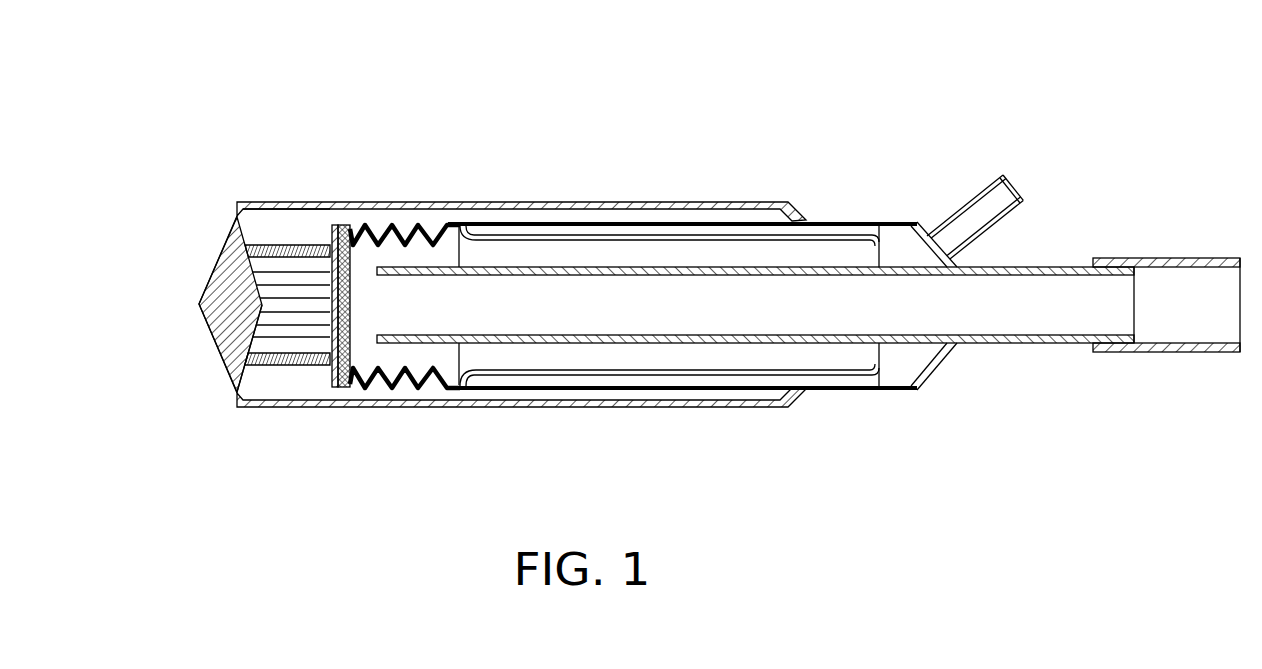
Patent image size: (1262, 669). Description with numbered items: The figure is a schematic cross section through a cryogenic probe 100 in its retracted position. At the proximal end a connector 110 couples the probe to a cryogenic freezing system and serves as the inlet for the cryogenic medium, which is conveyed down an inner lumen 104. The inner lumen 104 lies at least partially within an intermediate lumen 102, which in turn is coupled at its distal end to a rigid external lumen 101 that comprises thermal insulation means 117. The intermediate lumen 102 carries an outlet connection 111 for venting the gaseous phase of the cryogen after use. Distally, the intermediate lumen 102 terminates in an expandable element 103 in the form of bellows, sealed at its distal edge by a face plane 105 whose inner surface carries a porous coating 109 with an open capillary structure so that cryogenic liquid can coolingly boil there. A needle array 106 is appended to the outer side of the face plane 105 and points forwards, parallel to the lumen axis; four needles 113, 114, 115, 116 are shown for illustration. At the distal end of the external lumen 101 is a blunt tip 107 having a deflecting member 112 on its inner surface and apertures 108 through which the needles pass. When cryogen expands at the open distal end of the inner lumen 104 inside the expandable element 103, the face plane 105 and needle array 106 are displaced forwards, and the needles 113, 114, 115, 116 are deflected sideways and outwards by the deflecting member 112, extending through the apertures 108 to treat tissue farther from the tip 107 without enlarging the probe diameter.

The cryogenic probe 100 is at (488, 163).
The external lumen 101 is at (482, 407).
The intermediate lumen 102 is at (503, 222).
The expandable element 103 is at (388, 378).
The inner lumen 104 is at (645, 267).
The face plane 105 is at (320, 368).
The needle array 106 is at (288, 245).
The blunt tip 107 is at (272, 325).
The apertures 108 is at (245, 222).
The porous coating 109 is at (353, 265).
The connector 110 is at (1177, 352).
The outlet connection 111 is at (993, 178).
The deflecting member 112 is at (237, 216).
The needle 113 is at (268, 368).
The needle 114 is at (268, 278).
The needle 115 is at (257, 310).
The needle 116 is at (262, 375).
The thermal insulation means 117 is at (662, 372).